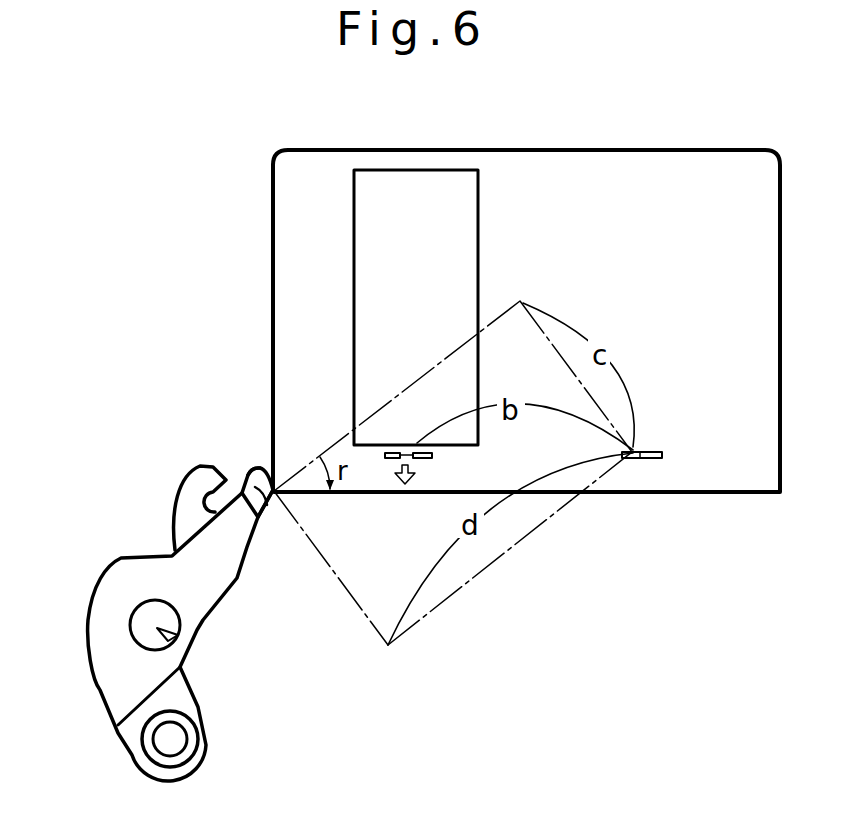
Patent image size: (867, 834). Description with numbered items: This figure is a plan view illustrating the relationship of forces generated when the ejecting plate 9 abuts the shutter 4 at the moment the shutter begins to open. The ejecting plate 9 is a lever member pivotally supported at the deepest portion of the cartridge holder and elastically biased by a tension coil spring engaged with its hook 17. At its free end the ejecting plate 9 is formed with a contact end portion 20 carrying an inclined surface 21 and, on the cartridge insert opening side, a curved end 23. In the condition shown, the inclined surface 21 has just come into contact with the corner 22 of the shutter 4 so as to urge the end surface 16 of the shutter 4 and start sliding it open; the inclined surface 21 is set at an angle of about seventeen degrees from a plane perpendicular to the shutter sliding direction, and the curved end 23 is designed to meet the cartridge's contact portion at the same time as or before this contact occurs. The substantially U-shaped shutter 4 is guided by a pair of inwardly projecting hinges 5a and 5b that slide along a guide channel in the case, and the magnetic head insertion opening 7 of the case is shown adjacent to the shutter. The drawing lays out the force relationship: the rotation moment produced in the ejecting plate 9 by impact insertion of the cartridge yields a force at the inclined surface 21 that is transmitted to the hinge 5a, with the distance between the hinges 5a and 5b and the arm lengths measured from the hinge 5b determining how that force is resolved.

The shutter 4 is at (723, 455).
The hinge 5a is at (389, 460).
The hinge 5b is at (651, 459).
The magnetic head insertion opening 7 is at (367, 225).
The ejecting plate 9 is at (115, 590).
The end surface 16 is at (272, 446).
The hook 17 is at (185, 485).
The contact end portion 20 is at (274, 505).
The inclined surface 21 is at (285, 498).
The corner 22 is at (275, 488).
The curved end 23 is at (252, 466).